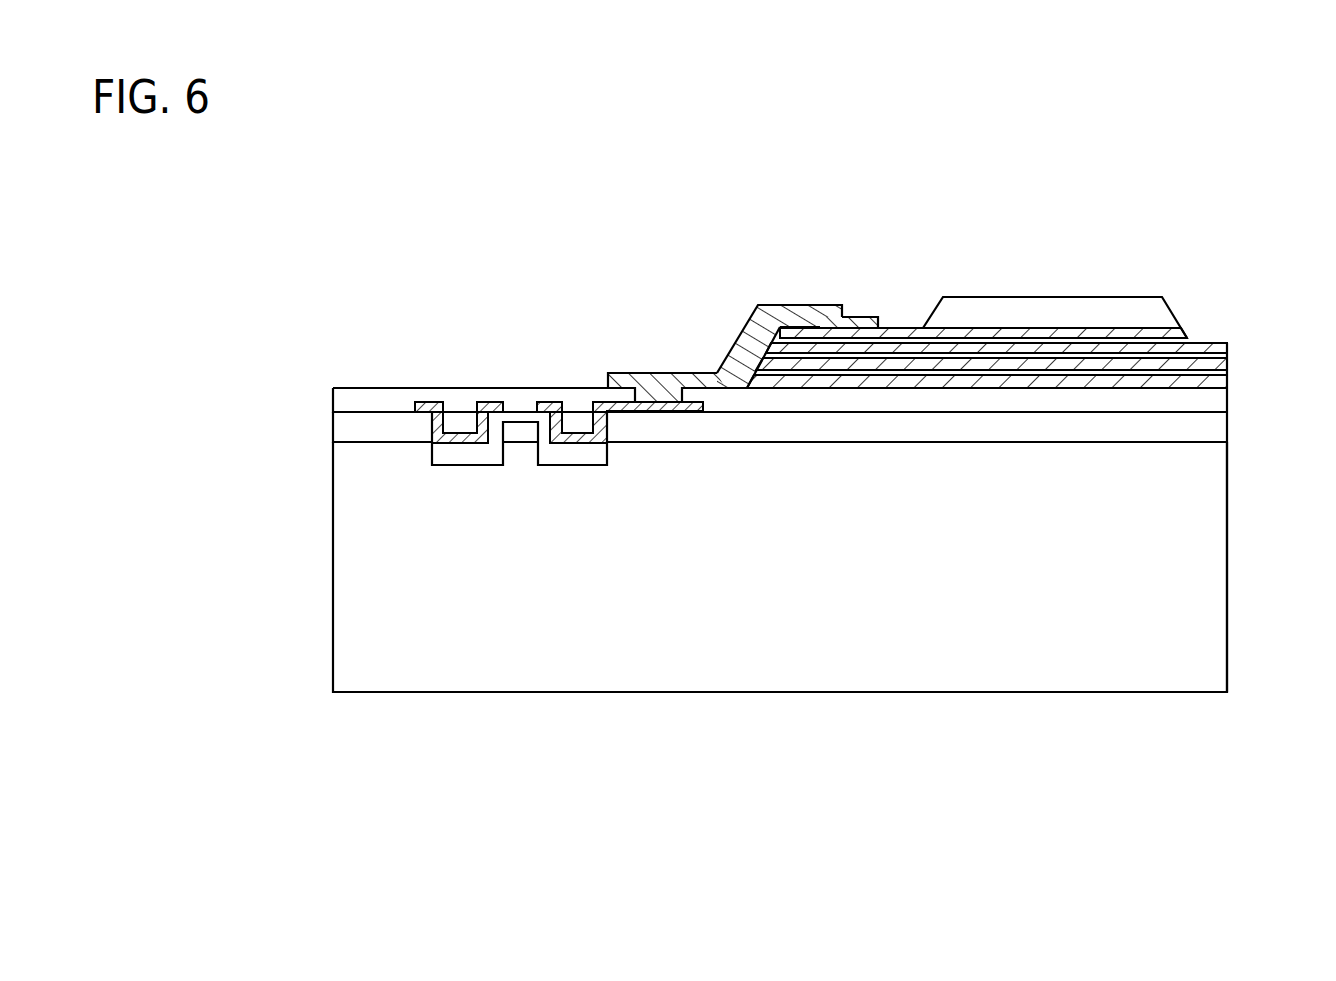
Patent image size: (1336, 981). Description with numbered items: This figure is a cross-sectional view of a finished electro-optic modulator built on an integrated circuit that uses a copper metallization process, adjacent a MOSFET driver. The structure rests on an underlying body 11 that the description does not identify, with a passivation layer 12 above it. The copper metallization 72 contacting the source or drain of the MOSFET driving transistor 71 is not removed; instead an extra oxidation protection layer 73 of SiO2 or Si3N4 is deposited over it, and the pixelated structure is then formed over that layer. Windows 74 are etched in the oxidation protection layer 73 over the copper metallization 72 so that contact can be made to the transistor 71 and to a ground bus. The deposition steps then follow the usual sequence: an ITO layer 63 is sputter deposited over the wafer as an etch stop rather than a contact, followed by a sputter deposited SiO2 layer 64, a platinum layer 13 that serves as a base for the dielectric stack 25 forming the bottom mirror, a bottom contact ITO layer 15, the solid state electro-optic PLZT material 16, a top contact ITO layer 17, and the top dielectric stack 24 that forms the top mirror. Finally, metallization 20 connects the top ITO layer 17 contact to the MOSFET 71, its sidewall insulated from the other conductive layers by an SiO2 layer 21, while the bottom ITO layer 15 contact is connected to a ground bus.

The substrate 11 is at (704, 700).
The passivation layer 12 is at (343, 430).
The platinum layer 13 is at (1228, 363).
The bottom transparent conductive ITO layer 15 is at (1228, 345).
The solid state electro-optic material 16 is at (1192, 340).
The top transparent conducting ITO layer 17 is at (1035, 327).
The metallization 20 is at (797, 305).
The SiO2 layer 21 is at (738, 337).
The top dielectric stack 24 is at (960, 313).
The dielectric stack 25 is at (1228, 355).
The ITO layer 63 is at (1228, 388).
The SiO2 layer 64 is at (1228, 375).
The MOSFET driving transistor 71 is at (503, 360).
The copper metallization 72 is at (438, 406).
The oxidation protection layer 73 is at (358, 397).
The windows 74 is at (662, 340).